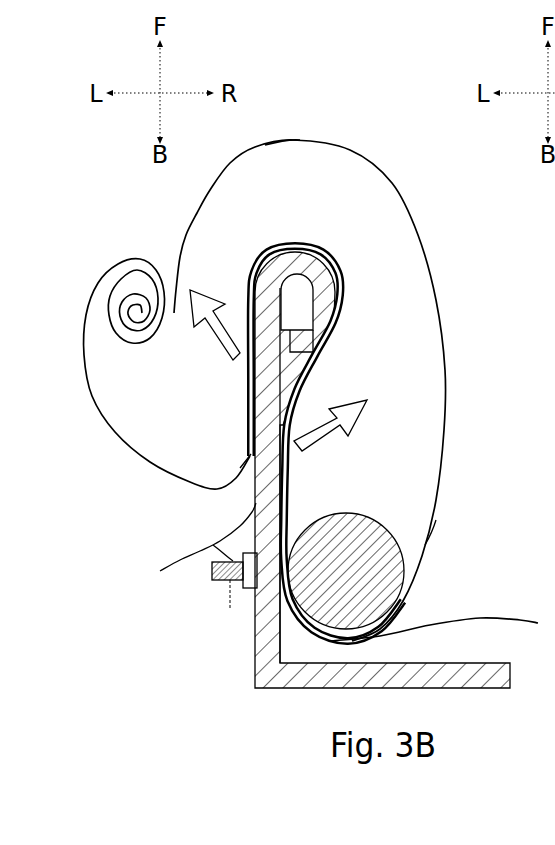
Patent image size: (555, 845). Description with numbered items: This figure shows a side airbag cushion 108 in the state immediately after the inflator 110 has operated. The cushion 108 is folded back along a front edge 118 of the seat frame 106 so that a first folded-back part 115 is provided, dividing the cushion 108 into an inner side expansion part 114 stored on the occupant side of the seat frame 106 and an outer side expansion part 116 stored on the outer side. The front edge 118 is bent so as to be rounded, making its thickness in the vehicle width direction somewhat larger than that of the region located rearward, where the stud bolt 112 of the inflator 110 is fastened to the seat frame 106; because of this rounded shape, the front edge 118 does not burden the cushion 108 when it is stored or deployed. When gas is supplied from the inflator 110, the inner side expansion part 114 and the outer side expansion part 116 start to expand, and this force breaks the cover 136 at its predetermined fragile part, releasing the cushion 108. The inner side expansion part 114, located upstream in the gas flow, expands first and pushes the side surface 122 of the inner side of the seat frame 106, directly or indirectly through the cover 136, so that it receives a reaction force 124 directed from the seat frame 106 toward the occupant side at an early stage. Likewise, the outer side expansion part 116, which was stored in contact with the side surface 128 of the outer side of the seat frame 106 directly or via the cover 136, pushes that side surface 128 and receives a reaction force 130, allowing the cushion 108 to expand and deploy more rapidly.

The seat frame 106 is at (277, 692).
The cushion 108 is at (431, 535).
The inflator 110 is at (404, 566).
The stud bolt 112 is at (223, 581).
The inner side expansion part 114 is at (448, 377).
The first folded-back part 115 is at (299, 137).
The outer side expansion part 116 is at (133, 459).
The front edge 118 is at (315, 246).
The side surface of the inner side of the seat frame 122 is at (291, 466).
The reaction force 124 is at (353, 390).
The side surface of the outer side of the seat frame 128 is at (251, 458).
The reaction force 130 is at (206, 290).
The cover 136 is at (167, 565).